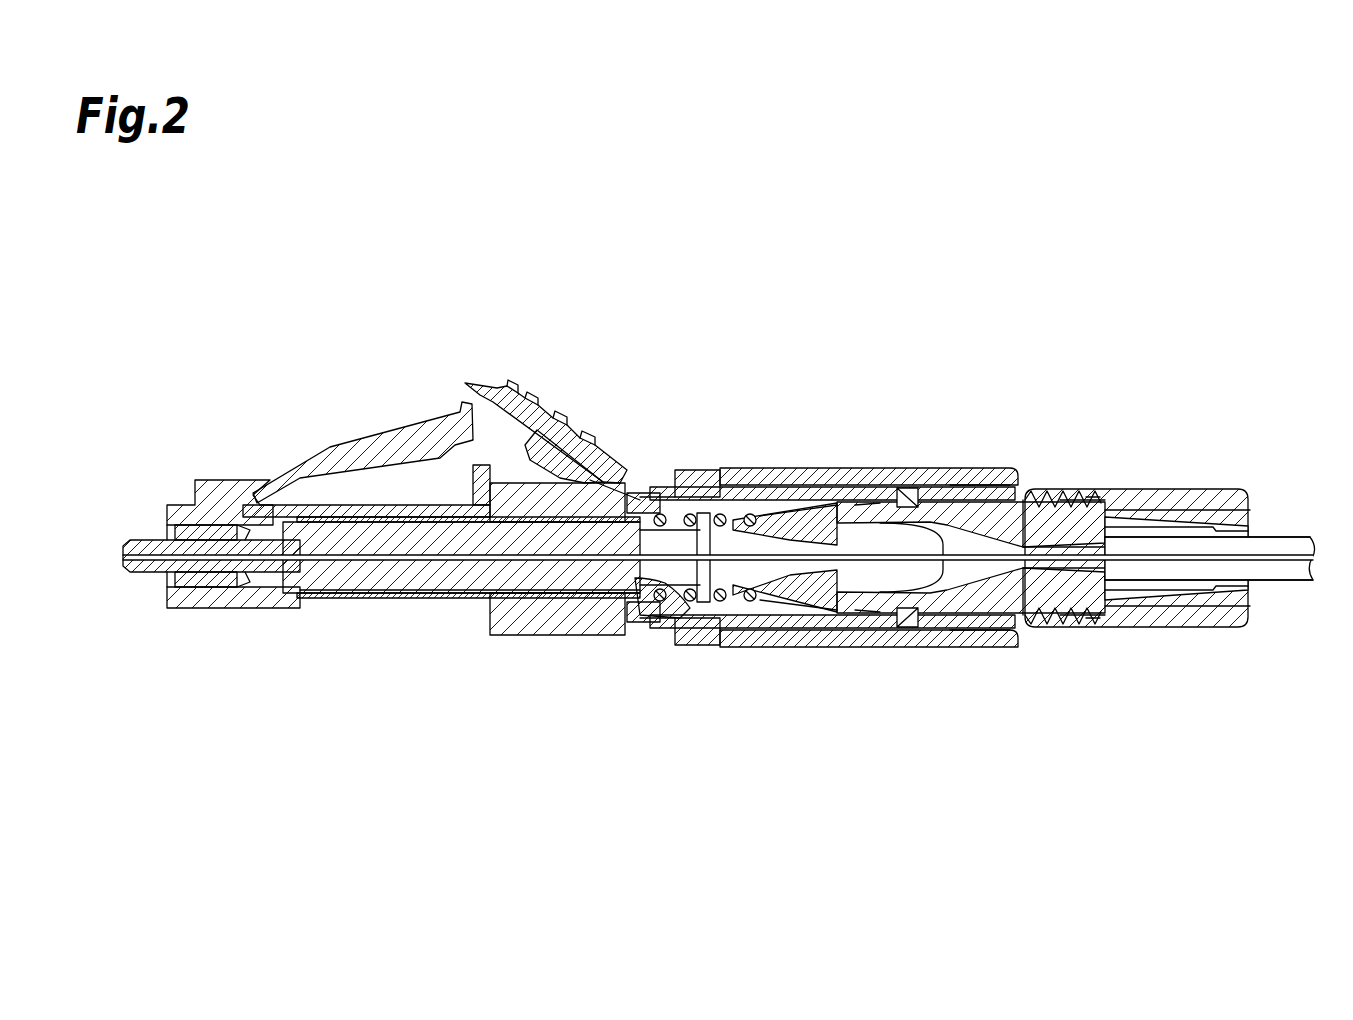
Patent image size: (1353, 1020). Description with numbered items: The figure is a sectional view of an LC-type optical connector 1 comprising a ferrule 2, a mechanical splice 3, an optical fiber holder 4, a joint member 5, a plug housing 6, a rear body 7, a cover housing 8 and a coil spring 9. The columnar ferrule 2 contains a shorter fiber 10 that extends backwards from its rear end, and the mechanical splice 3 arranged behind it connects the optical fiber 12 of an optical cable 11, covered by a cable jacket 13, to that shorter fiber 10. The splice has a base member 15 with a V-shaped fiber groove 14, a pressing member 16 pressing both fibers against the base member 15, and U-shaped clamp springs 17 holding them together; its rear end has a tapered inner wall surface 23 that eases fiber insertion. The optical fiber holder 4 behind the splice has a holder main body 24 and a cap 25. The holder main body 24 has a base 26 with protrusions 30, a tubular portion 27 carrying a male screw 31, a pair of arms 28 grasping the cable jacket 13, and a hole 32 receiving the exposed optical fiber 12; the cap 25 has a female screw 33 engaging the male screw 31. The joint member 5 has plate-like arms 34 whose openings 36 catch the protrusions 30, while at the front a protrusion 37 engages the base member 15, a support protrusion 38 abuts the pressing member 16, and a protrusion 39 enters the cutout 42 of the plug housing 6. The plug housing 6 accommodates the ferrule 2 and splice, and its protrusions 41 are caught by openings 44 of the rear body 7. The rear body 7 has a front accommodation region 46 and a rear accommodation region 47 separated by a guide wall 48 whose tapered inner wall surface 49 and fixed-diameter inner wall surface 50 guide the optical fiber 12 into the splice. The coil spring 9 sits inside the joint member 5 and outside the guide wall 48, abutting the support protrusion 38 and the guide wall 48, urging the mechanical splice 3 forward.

The optical connector 1 is at (347, 257).
The ferrule 2 is at (158, 535).
The mechanical splice 3 is at (439, 514).
The optical fiber holder 4 is at (1106, 490).
The joint member 5 is at (780, 520).
The plug housing 6 is at (237, 492).
The rear body 7 is at (721, 485).
The cover housing 8 is at (932, 525).
The coil spring 9 is at (665, 612).
The shorter fiber 10 is at (213, 598).
The optical cable 11 is at (1270, 532).
The optical fiber 12 is at (965, 645).
The cable jacket 13 is at (1282, 572).
The fiber groove 14 is at (381, 585).
The base member 15 is at (443, 592).
The pressing member 16 is at (442, 512).
The clamp springs 17 is at (338, 605).
The tapered inner wall surface 23 is at (676, 635).
The holder main body 24 is at (962, 495).
The cap 25 is at (1190, 500).
The base 26 is at (947, 645).
The tubular portion 27 is at (1055, 628).
The arms 28 is at (1160, 620).
The protrusions for connection 30 is at (902, 490).
The male screw 31 is at (1052, 505).
The hole 32 is at (1087, 625).
The female screw 33 is at (1086, 515).
The arms 34 is at (805, 495).
The opening for connection 36 is at (860, 503).
The protrusion for connection 37 is at (642, 625).
The support protrusion 38 is at (691, 490).
The protrusion for positioning 39 is at (648, 480).
The protrusions for connection 41 is at (510, 470).
The cutout 42 is at (633, 495).
The openings for connection 44 is at (549, 500).
The front accommodation region 46 is at (577, 500).
The rear accommodation region 47 is at (940, 502).
The guide wall 48 is at (812, 520).
The tapered inner wall surface 49 is at (810, 630).
The inner wall surface 50 is at (735, 620).